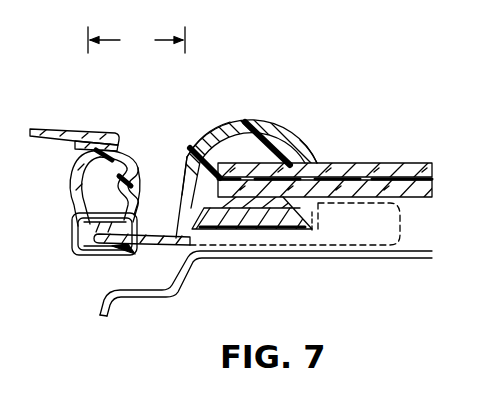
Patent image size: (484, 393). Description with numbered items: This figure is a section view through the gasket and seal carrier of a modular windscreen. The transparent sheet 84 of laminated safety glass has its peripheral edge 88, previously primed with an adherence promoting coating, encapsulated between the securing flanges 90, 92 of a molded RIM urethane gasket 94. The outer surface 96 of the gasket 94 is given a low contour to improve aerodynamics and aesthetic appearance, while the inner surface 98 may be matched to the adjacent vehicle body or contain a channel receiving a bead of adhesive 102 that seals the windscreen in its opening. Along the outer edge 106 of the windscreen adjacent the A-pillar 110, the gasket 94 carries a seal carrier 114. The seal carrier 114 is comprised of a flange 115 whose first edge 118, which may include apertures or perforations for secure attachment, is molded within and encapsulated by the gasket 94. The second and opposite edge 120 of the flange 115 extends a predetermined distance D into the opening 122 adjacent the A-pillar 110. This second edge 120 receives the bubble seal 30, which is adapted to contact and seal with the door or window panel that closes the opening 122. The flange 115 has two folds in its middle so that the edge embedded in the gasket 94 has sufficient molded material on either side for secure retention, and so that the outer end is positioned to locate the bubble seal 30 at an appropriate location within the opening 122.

The predetermined distance D is at (136, 40).
The bubble seal 30 is at (61, 165).
The transparent sheet 84 is at (427, 162).
The peripheral edge 88 is at (252, 120).
The securing flange 90 is at (316, 158).
The securing flange 92 is at (333, 223).
The molded RIM urethane gasket 94 is at (206, 122).
The outer surface of gasket 96 is at (242, 121).
The inner surface of gasket 98 is at (260, 232).
The bead of adhesive 102 is at (401, 224).
The outer edge of windscreen 106 is at (189, 148).
The A-pillar 110 is at (163, 299).
The seal carrier 114 is at (160, 246).
The flange 115 is at (162, 234).
The first edge of carrier 118 is at (272, 232).
The second edge of flange 120 is at (78, 256).
The opening 122 is at (54, 203).